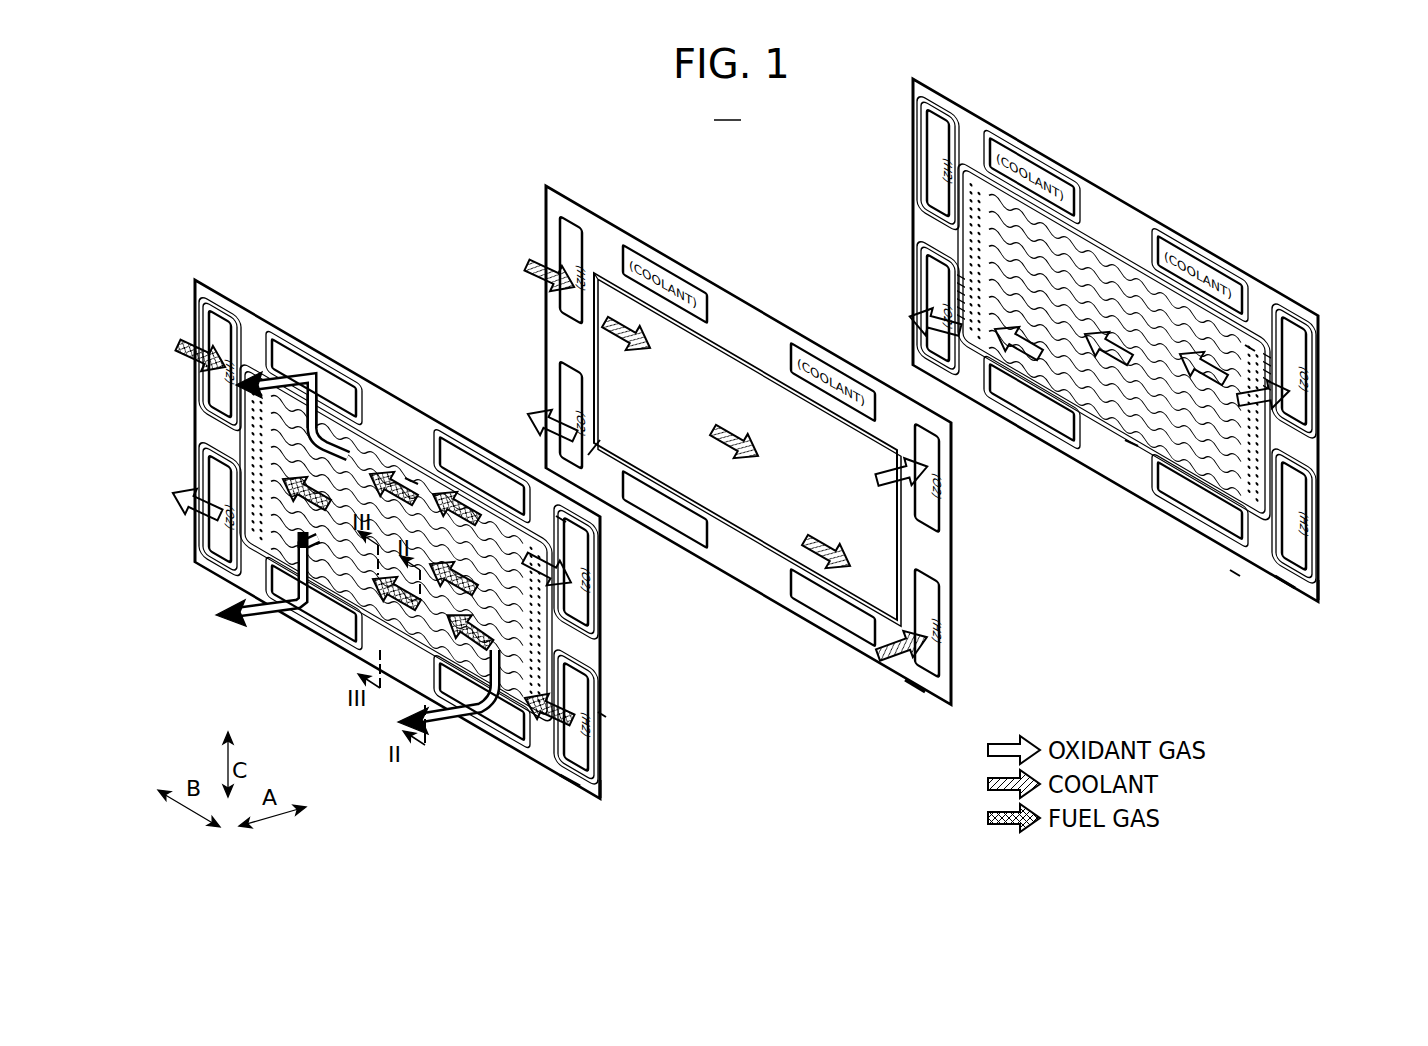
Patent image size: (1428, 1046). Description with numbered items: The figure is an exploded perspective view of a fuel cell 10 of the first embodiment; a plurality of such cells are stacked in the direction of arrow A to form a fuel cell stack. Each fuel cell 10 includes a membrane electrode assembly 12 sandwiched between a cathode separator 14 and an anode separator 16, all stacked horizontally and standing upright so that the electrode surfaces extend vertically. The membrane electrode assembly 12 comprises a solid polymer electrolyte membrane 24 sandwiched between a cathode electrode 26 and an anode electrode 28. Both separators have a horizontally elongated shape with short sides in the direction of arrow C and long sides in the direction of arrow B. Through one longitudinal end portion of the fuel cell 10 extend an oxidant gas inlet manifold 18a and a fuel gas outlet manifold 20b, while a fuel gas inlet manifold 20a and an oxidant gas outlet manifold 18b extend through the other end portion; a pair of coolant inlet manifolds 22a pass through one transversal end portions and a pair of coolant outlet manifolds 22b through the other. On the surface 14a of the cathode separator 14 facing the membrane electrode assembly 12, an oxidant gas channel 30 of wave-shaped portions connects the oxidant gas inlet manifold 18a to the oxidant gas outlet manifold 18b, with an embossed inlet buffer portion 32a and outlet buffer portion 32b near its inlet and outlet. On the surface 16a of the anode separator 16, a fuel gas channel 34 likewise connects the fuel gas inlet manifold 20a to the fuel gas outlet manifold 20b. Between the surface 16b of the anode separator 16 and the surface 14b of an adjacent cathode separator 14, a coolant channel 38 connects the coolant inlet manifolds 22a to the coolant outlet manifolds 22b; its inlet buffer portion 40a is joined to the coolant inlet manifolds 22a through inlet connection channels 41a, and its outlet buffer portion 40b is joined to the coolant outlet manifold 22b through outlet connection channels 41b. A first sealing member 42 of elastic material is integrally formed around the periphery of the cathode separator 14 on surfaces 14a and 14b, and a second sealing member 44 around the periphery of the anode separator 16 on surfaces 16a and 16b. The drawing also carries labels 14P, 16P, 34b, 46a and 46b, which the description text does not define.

The fuel cell 10 is at (729, 108).
The membrane electrode assembly 12 is at (567, 192).
The cathode separator 14 is at (935, 87).
The surface of the cathode separator 14a is at (1283, 585).
The surface of the cathode separator 14b is at (1312, 600).
The protrusion 14P is at (1250, 350).
The anode separator 16 is at (212, 291).
The surface of the anode separator 16a is at (605, 797).
The surface of the anode separator 16b is at (565, 790).
The protrusion 16P is at (565, 522).
The oxidant gas inlet manifold 18a is at (597, 622).
The oxidant gas outlet manifold 18b is at (210, 545).
The fuel gas inlet manifold 20a is at (213, 327).
The fuel gas outlet manifold 20b is at (585, 752).
The coolant inlet manifolds 22a is at (455, 440).
The coolant outlet manifolds 22b is at (292, 342).
The solid polymer electrolyte membrane 24 is at (917, 685).
The cathode electrode 26 is at (780, 520).
The anode electrode 28 is at (748, 505).
The oxidant gas channel 30 is at (1215, 343).
The inlet buffer portion 32a is at (1265, 492).
The outlet buffer portion 32b is at (978, 240).
The fuel gas channel 34 is at (360, 450).
The flow field portion 34b is at (237, 583).
The coolant channel 38 is at (412, 478).
The inlet buffer portion 40a is at (540, 667).
The outlet buffer portion 40b is at (262, 470).
The inlet connection channels 41a is at (450, 697).
The outlet connection channels 41b is at (336, 392).
The first sealing member 42 is at (1237, 572).
The second sealing member 44 is at (605, 718).
The connection channel 46a is at (1280, 372).
The connection channel 46b is at (953, 360).